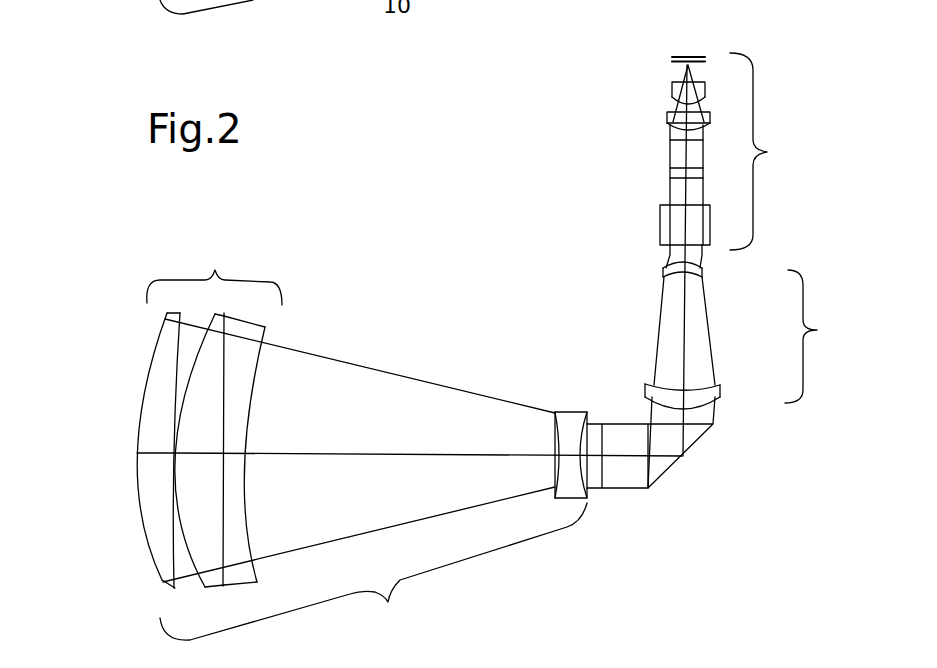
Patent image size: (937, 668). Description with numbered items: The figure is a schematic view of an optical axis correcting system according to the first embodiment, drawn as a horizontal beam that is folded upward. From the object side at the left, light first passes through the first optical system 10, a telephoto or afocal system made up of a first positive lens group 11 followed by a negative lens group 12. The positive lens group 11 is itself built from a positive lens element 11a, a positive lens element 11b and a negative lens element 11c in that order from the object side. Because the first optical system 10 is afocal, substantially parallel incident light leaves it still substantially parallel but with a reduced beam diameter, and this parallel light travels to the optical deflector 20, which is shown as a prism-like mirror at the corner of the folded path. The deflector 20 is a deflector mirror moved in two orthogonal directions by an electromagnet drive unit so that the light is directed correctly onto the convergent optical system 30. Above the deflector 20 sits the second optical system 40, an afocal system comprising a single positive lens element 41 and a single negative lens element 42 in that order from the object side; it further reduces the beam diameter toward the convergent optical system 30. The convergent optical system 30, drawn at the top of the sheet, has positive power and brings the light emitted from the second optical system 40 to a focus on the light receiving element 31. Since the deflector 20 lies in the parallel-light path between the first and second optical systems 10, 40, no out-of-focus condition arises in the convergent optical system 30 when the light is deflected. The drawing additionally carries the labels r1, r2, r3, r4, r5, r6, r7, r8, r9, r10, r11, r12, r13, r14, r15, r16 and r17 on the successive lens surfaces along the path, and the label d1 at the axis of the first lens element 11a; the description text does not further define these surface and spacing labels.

The first optical system 10 is at (335, 441).
The first positive lens group 11 is at (203, 434).
The positive lens element 11a is at (110, 475).
The positive lens element 11b is at (141, 451).
The negative lens element 11c is at (295, 443).
The negative lens group 12 is at (568, 451).
The optical deflector 20 is at (682, 463).
The optical convergent optical system 30 is at (685, 125).
The light receiving element 31 is at (672, 55).
The second optical system 40 is at (722, 337).
The positive lens element 41 is at (702, 390).
The negative lens element 42 is at (682, 266).
The axial thickness d1 is at (152, 454).
The lens surface r1 is at (143, 372).
The lens surface r2 is at (180, 575).
The lens surface r3 is at (212, 318).
The lens surface r4 is at (224, 586).
The lens surface r5 is at (230, 500).
The lens surface r6 is at (552, 433).
The lens surface r7 is at (588, 478).
The lens surface r8 is at (705, 409).
The lens surface r9 is at (673, 383).
The lens surface r10 is at (677, 272).
The lens surface r11 is at (675, 262).
The lens surface r12 is at (667, 125).
The lens surface r13 is at (714, 117).
The lens surface r14 is at (667, 117).
The lens surface r15 is at (706, 83).
The lens surface r16 is at (672, 93).
The lens surface r17 is at (703, 66).